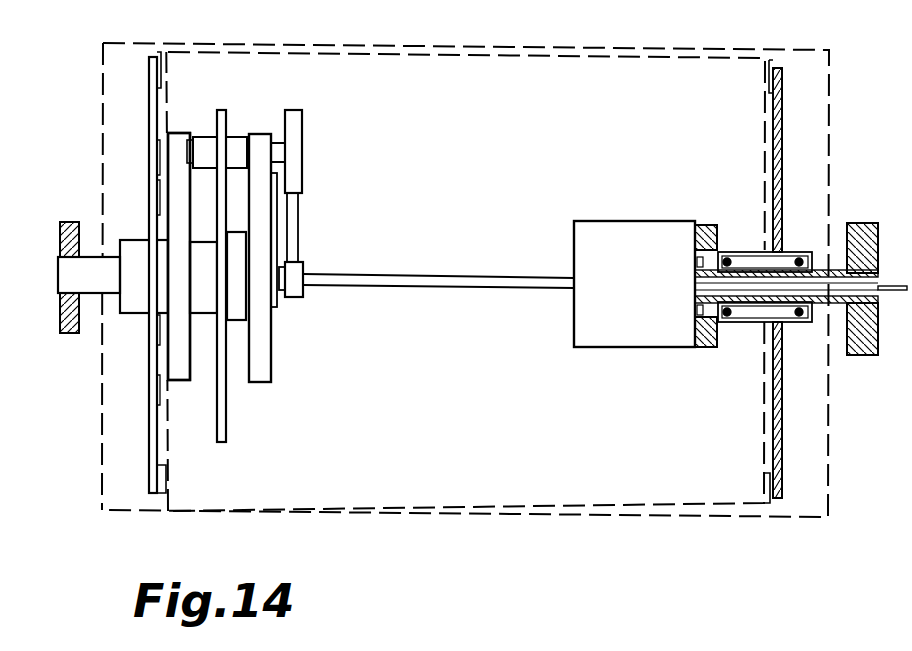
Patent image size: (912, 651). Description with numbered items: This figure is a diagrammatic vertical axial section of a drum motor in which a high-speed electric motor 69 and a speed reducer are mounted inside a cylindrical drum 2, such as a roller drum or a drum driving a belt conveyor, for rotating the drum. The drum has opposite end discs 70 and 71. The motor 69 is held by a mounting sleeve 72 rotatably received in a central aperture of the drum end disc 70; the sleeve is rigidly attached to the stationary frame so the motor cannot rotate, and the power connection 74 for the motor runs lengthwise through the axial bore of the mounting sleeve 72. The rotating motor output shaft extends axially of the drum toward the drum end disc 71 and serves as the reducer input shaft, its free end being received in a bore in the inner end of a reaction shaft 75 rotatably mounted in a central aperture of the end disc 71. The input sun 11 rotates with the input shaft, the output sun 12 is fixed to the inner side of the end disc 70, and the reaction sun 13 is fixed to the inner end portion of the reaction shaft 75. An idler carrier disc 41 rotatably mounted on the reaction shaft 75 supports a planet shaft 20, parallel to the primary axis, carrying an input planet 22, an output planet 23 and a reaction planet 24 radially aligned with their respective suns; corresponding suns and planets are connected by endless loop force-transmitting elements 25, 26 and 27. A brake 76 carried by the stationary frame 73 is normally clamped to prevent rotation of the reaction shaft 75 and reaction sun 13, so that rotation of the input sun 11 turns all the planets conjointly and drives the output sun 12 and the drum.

The cylindrical drum 2 is at (576, 52).
The input sun 11 is at (303, 291).
The output sun 12 is at (191, 374).
The reaction sun 13 is at (272, 368).
The planet shaft 20 is at (280, 141).
The input planet 22 is at (302, 131).
The output planet 23 is at (192, 137).
The reaction planet 24 is at (246, 132).
The endless loop force-transmitting element 25 is at (296, 209).
The endless loop force-transmitting element 26 is at (181, 197).
The endless loop force-transmitting element 27 is at (258, 240).
The idler carrier disc 41 is at (226, 432).
The electric motor 69 is at (608, 228).
The drum end disc 70 is at (782, 148).
The drum end disc 71 is at (153, 125).
The mounting sleeve 72 is at (840, 304).
The stationary frame 73 is at (848, 232).
The power connection 74 is at (892, 292).
The reaction shaft 75 is at (92, 292).
The brake 76 is at (60, 244).